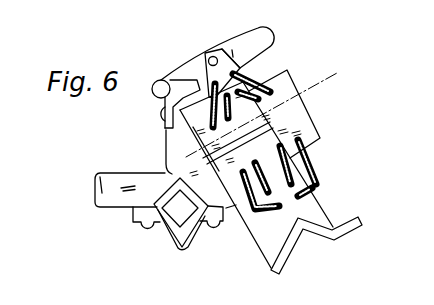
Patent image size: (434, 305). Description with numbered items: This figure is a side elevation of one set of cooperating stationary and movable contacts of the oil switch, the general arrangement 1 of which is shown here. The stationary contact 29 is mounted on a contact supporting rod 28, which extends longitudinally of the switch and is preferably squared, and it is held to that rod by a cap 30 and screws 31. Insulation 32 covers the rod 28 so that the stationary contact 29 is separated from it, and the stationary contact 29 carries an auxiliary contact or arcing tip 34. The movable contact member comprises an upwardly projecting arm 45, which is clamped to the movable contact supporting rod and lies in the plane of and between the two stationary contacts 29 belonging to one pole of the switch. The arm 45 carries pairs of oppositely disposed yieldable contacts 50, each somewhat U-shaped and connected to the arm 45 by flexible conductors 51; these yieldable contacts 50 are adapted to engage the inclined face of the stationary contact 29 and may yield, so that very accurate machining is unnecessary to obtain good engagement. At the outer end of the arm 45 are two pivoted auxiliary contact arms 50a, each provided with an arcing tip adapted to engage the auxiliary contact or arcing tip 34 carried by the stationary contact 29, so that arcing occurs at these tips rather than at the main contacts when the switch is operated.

The base plate 1 is at (184, 155).
The contact supporting rod 28 is at (174, 205).
The stationary contact 29 is at (237, 206).
The cap 30 is at (188, 238).
The screw 31 is at (140, 229).
The insulation 32 is at (169, 241).
The auxiliary contact or arcing tip 34 is at (157, 113).
The arm 45 is at (320, 203).
The yieldable contact 50 is at (314, 124).
The pivoted auxiliary contact arm 50a is at (187, 68).
The flexible conductor 51 is at (314, 160).